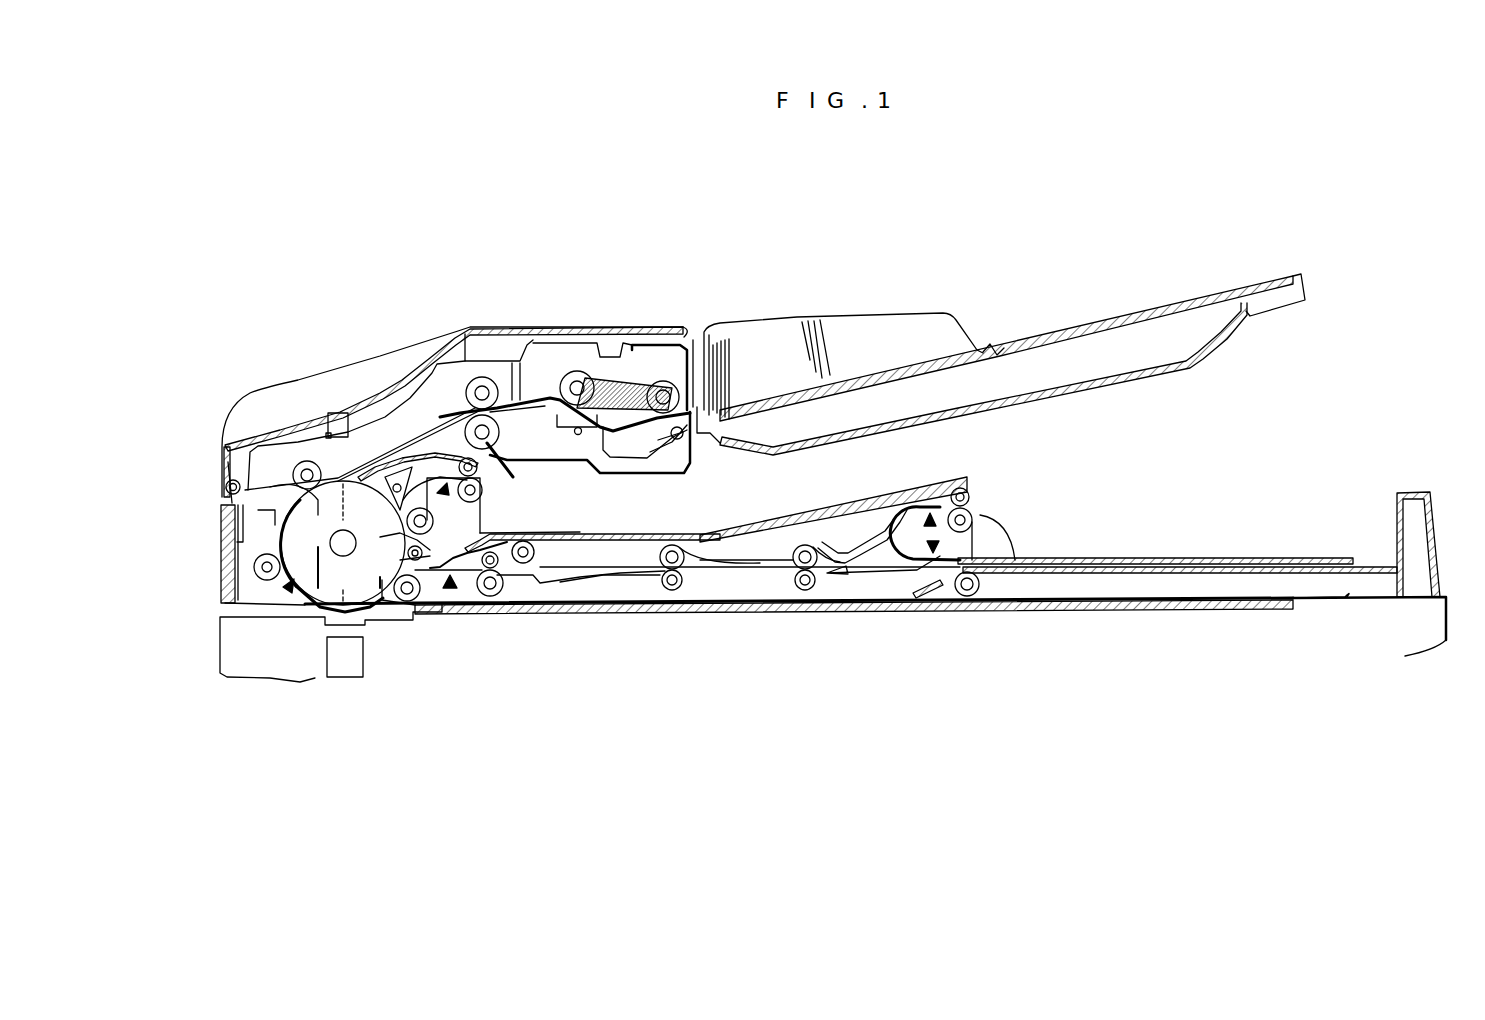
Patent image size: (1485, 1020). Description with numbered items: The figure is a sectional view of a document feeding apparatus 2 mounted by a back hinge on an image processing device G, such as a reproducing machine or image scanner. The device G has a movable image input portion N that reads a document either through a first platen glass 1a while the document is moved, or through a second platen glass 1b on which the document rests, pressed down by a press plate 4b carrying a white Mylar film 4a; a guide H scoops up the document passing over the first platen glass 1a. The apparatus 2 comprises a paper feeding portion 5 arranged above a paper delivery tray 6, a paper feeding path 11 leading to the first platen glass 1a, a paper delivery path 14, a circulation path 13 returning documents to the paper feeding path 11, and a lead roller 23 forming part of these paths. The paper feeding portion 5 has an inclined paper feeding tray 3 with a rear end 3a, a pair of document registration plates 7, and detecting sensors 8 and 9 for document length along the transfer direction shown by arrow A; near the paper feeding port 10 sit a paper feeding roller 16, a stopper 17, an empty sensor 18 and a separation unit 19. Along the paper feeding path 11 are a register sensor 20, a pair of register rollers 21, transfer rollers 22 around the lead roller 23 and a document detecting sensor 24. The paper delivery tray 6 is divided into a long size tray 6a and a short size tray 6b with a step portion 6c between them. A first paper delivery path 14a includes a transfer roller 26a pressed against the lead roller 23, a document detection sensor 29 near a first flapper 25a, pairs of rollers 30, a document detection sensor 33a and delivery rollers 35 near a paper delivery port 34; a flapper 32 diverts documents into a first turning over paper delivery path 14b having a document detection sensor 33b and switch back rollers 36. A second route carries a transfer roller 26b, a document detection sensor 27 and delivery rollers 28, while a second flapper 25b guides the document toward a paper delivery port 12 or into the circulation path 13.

The document feeding apparatus 2 is at (497, 255).
The paper feeding portion 5 is at (553, 312).
The paper feeding path 11 is at (445, 440).
The register rollers 21 is at (481, 374).
The separation unit 19 is at (577, 368).
The paper feeding roller 16 is at (665, 380).
The paper feeding port 10 is at (694, 340).
The register sensor 20 is at (518, 428).
The empty sensor 18 is at (637, 432).
The stopper 17 is at (683, 440).
The paper delivery port 12 is at (495, 473).
The document registration plates 7 is at (875, 325).
The paper feeding tray 3 is at (1256, 275).
The rear end of the paper feeding tray 3a is at (1305, 283).
The arrow indicating document transfer direction A is at (1020, 311).
The detecting sensor 8 is at (995, 350).
The detecting sensor 9 is at (1178, 305).
The paper delivery tray 6 is at (1048, 462).
The long size tray 6a is at (945, 485).
The step portion 6c is at (969, 494).
The short size tray 6b is at (1067, 566).
The paper delivery path 14 is at (739, 550).
The first paper delivery path 14a is at (567, 580).
The first turning over paper delivery path 14b is at (1198, 574).
The second platen glass 1b is at (745, 614).
The first platen glass 1a is at (327, 623).
The guide H is at (357, 657).
The image input portion N is at (345, 677).
The white Mylar film 4a is at (640, 614).
The press plate 4b is at (1350, 600).
The image processing device G is at (1448, 650).
The lead roller 23 is at (238, 515).
The transfer rollers 22 is at (298, 455).
The document detecting sensor 24 is at (283, 590).
The circulation path 13 is at (265, 535).
The first flapper 25a is at (395, 556).
The second flapper 25b is at (397, 482).
The delivery rollers 28 is at (480, 492).
The document detection sensor 27 is at (440, 515).
The transfer roller 26a is at (406, 605).
The transfer roller 26b is at (430, 600).
The document detection sensor 29 is at (450, 590).
The pairs of rollers 30 is at (492, 597).
The document detection sensor 33a is at (897, 517).
The flapper 32 is at (878, 570).
The document detection sensor 33b is at (925, 594).
The delivery rollers 35 is at (973, 527).
The paper delivery port 34 is at (1000, 540).
The switch back rollers 36 is at (967, 597).